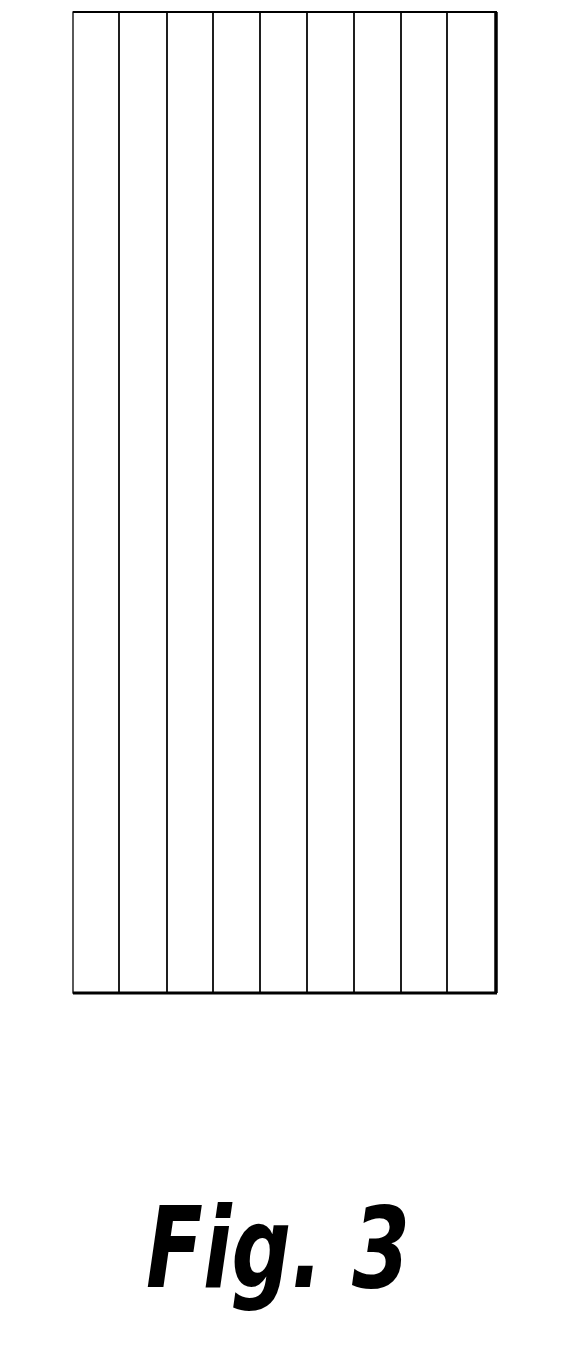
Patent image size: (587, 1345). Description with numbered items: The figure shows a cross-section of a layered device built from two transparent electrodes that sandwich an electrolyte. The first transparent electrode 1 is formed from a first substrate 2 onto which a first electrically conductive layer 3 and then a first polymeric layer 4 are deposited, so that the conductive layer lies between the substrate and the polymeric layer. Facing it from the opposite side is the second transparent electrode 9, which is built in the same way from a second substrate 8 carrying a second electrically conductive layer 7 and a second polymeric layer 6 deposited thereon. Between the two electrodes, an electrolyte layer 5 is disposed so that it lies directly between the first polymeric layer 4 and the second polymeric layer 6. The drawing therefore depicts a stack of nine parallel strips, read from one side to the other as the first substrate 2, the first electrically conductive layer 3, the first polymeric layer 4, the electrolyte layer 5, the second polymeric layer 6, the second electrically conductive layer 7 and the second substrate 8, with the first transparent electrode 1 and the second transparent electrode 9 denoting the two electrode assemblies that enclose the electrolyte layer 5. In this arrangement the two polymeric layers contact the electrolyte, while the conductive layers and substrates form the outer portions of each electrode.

The first transparent electrode 1 is at (77, 994).
The first substrate 2 is at (127, 995).
The first electrically conductive layer 3 is at (187, 996).
The first polymeric layer 4 is at (233, 996).
The electrolyte layer 5 is at (282, 996).
The second polymeric layer 6 is at (330, 996).
The second electrically conductive layer 7 is at (378, 997).
The second substrate 8 is at (432, 995).
The second transparent electrode 9 is at (488, 997).